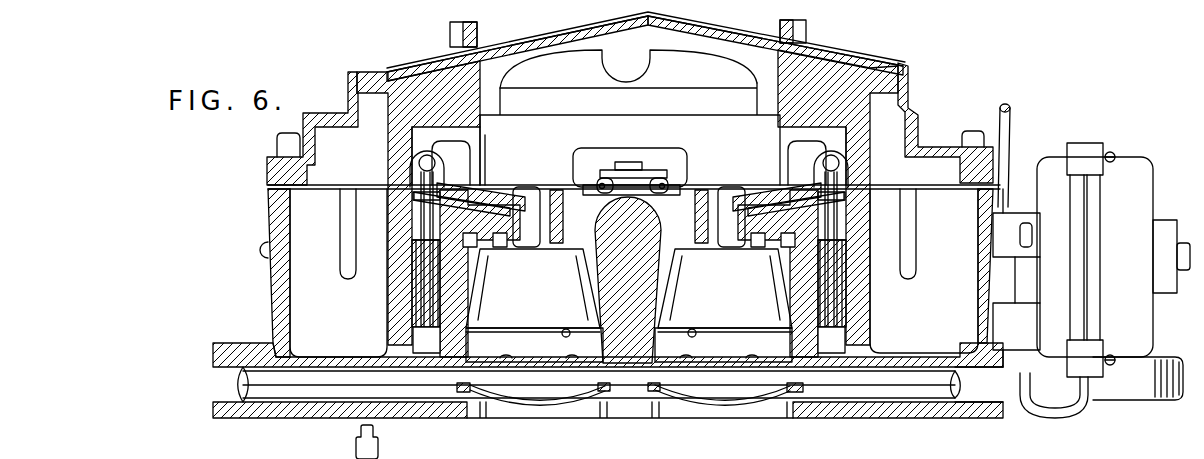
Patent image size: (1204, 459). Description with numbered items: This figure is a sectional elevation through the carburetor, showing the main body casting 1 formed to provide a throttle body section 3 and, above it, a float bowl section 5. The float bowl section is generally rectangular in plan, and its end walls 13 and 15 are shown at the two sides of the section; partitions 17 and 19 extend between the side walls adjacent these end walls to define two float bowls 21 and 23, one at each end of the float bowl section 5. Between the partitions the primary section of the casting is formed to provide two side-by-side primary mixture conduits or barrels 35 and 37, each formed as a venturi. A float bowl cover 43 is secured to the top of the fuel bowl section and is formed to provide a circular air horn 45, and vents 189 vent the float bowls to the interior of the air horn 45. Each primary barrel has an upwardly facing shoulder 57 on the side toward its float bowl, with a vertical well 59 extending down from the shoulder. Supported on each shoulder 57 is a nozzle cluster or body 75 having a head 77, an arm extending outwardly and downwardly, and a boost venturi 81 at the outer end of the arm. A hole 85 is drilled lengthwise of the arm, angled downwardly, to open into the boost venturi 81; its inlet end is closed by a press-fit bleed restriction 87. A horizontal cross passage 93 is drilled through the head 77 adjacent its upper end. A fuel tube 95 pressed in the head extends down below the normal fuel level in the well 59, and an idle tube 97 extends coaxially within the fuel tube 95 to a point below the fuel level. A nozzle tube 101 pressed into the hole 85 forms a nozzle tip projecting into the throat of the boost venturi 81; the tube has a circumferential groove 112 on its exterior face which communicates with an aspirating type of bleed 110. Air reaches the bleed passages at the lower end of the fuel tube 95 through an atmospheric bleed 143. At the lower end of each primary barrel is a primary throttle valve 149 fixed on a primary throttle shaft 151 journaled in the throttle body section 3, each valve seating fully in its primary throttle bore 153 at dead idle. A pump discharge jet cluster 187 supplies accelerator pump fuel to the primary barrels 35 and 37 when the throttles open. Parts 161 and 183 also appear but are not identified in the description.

The main body casting 1 is at (265, 302).
The throttle body section 3 is at (437, 414).
The float bowl section 5 is at (272, 205).
The end wall 13 is at (264, 252).
The end wall 15 is at (980, 310).
The partition 17 is at (400, 298).
The partition 19 is at (866, 296).
The float bowl 21 is at (329, 279).
The float bowl 23 is at (952, 254).
The primary mixture conduit or barrel 35 is at (541, 322).
The primary mixture conduit or barrel 37 is at (729, 322).
The float bowl cover 43 is at (912, 101).
The air horn 45 is at (450, 28).
The shoulder 57 is at (401, 256).
The well 59 is at (418, 338).
The nozzle cluster or body 75 is at (500, 177).
The head 77 is at (402, 142).
The boost venturi 81 is at (557, 228).
The hole 85 is at (440, 190).
The bleed restriction 87 is at (413, 199).
The horizontal cross passage 93 is at (418, 163).
The fuel tube 95 is at (414, 318).
The idle tube 97 is at (419, 220).
The nozzle tube 101 is at (527, 198).
The aspirating type of bleed 110 is at (490, 252).
The circumferential groove 112 is at (482, 185).
The atmospheric bleed 143 is at (375, 429).
The primary throttle valve 149 is at (548, 412).
The primary throttle shaft 151 is at (845, 388).
The primary throttle bore 153 is at (468, 408).
The central post 161 is at (612, 204).
The gear box screw 183 is at (1117, 156).
The pump discharge jet cluster 187 is at (628, 162).
The vent 189 is at (657, 23).